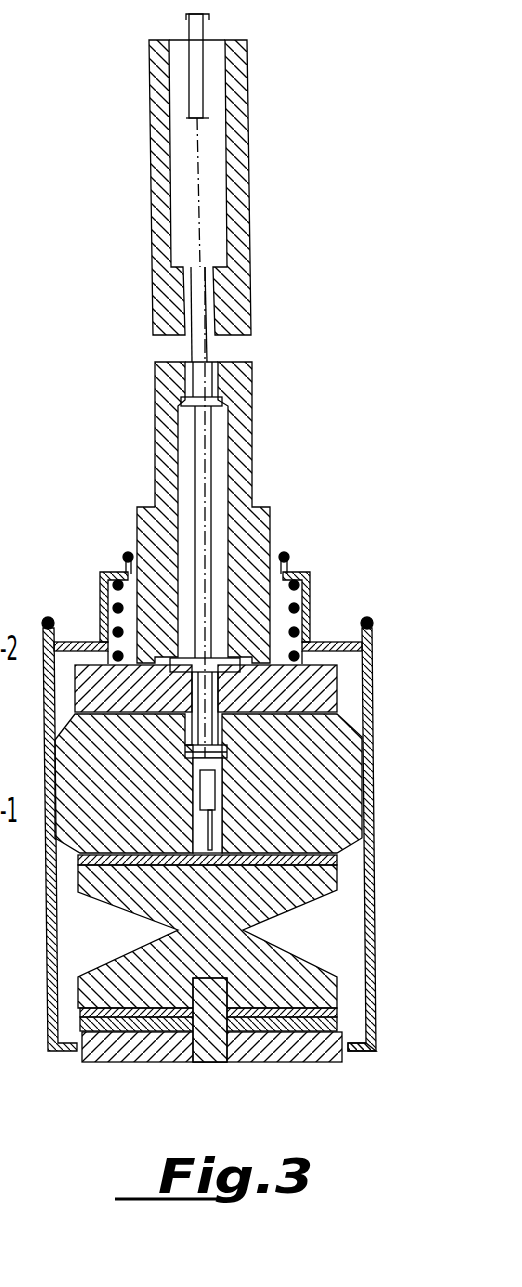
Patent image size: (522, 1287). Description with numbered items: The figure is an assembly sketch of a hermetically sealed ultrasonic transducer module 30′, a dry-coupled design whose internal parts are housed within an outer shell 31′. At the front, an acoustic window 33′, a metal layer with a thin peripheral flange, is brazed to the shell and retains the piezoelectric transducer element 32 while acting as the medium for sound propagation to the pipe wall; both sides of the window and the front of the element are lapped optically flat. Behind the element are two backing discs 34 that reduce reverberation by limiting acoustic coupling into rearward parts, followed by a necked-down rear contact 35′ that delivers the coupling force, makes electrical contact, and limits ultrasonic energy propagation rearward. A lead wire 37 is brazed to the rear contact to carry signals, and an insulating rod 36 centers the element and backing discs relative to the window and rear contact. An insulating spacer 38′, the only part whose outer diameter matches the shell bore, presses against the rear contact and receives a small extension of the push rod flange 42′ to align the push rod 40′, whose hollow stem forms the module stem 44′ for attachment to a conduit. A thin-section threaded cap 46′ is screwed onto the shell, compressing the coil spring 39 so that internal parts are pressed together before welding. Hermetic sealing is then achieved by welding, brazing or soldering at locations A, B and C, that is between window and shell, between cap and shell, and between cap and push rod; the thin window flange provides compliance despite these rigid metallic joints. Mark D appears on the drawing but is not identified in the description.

The valve assembly 30′ is at (36, 914).
The housing 31′ is at (50, 950).
The sealing plate 32 is at (120, 1030).
The base plate 33′ is at (178, 1048).
The seal plate 34 is at (340, 860).
The piston 35′ is at (335, 890).
The bolt 36 is at (211, 1050).
The valve stem 37 is at (207, 797).
The valve body 38′ is at (340, 770).
The spring housing 39 is at (306, 590).
The guide tube 40′ is at (152, 503).
The upper plate 42′ is at (330, 690).
The actuator tube 44′ is at (160, 172).
The spring housing 46′ is at (104, 605).
The bottom flange A is at (373, 1058).
The housing rim B is at (368, 620).
The seal C is at (287, 556).
The seal D is at (140, 537).